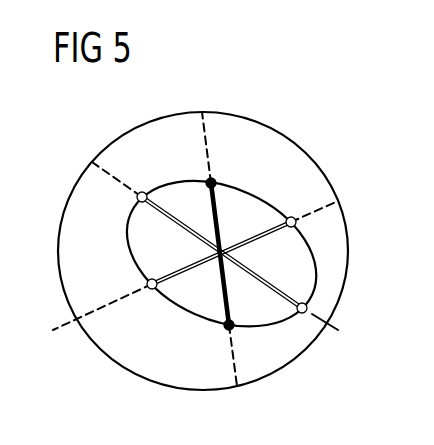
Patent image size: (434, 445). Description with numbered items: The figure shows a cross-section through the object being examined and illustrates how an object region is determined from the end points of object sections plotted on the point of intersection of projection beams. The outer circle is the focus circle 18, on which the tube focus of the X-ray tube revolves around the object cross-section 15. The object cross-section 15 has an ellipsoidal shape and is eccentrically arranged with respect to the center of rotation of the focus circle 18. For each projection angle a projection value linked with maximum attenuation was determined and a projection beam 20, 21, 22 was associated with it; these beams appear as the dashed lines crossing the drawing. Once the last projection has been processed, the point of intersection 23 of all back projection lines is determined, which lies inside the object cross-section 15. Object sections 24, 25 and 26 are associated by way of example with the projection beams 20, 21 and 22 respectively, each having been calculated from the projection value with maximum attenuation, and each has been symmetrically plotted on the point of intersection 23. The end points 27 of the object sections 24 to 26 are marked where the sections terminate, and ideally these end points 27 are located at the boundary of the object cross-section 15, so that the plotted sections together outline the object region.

The focus circle 18 is at (267, 122).
The object cross-section 15 is at (257, 197).
The projection beam 20 is at (105, 303).
The projection beam 21 is at (231, 363).
The projection beam 22 is at (112, 177).
The point of intersection 23 is at (226, 247).
The object section 24 is at (213, 262).
The object section 25 is at (228, 285).
The object section 26 is at (173, 218).
The end points 27 is at (213, 173).